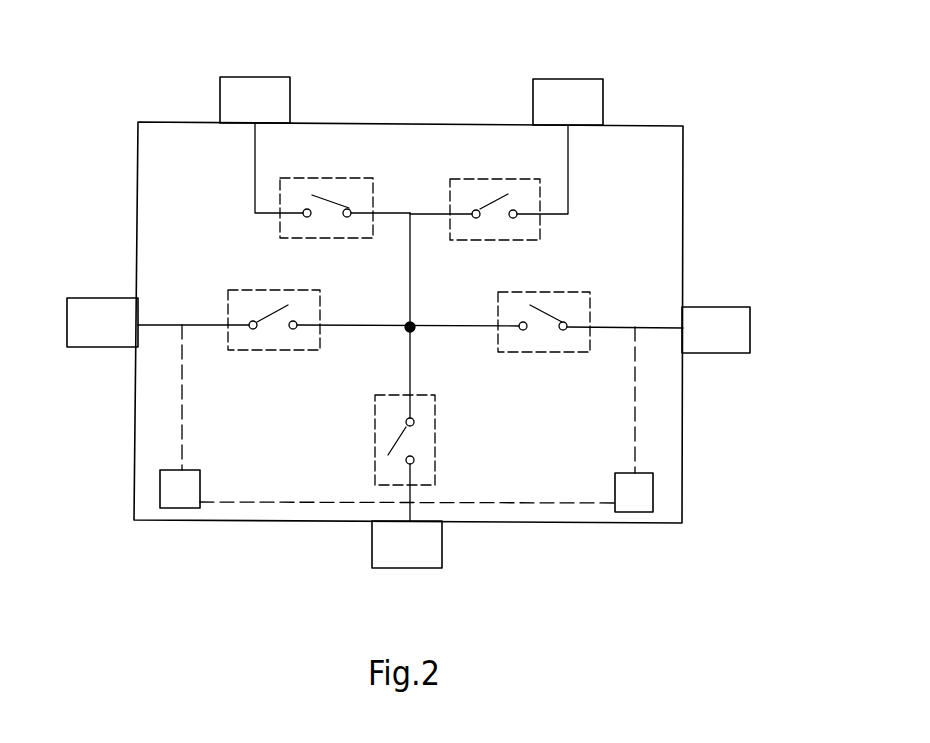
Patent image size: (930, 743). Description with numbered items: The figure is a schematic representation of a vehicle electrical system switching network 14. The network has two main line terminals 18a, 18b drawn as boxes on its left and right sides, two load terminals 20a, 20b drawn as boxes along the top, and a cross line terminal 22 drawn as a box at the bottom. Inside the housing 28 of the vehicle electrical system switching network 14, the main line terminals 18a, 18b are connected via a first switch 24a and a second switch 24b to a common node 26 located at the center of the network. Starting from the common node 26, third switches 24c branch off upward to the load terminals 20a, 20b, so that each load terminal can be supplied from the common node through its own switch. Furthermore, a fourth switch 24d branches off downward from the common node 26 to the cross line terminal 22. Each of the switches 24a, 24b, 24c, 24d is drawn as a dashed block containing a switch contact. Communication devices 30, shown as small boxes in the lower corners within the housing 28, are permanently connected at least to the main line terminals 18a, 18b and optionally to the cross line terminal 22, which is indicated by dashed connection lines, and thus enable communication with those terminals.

The vehicle electrical system switching network 14 is at (720, 66).
The main line terminal 18a is at (734, 345).
The main line terminal 18b is at (121, 337).
The load terminal 20a is at (590, 116).
The load terminal 20b is at (276, 114).
The cross line terminal 22 is at (419, 560).
The first switch 24a is at (240, 290).
The second switch 24b is at (578, 292).
The third switches 24c is at (338, 178).
The fourth switch 24d is at (437, 428).
The common node 26 is at (405, 326).
The housing 28 is at (683, 197).
The communication devices 30 is at (180, 508).